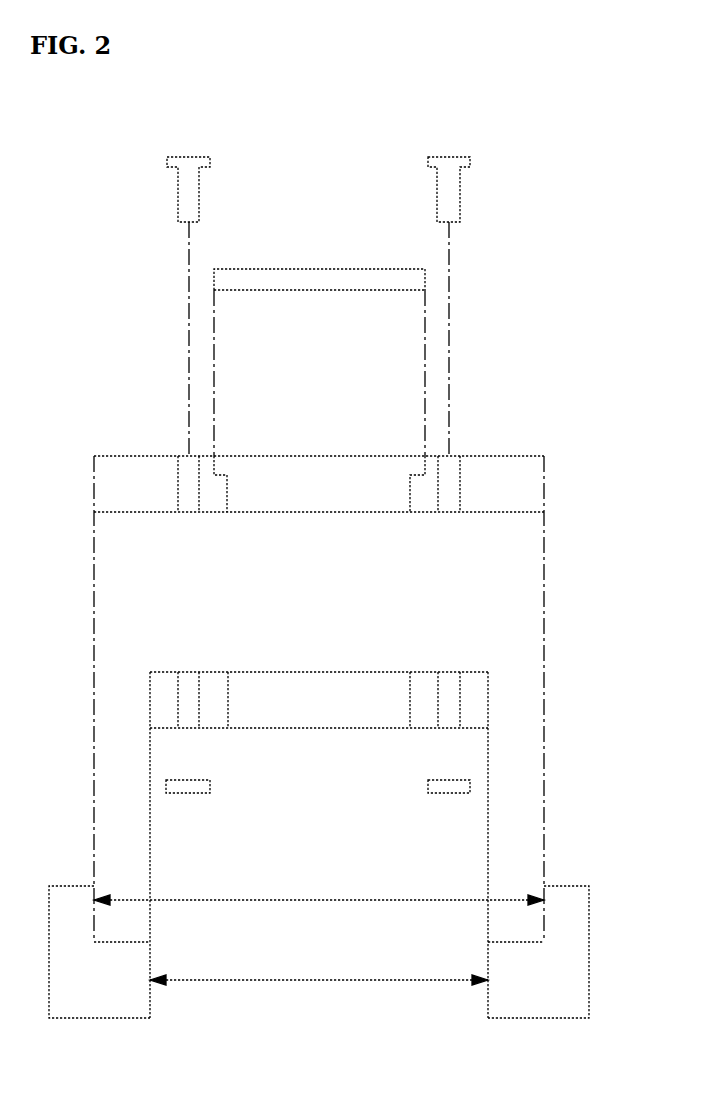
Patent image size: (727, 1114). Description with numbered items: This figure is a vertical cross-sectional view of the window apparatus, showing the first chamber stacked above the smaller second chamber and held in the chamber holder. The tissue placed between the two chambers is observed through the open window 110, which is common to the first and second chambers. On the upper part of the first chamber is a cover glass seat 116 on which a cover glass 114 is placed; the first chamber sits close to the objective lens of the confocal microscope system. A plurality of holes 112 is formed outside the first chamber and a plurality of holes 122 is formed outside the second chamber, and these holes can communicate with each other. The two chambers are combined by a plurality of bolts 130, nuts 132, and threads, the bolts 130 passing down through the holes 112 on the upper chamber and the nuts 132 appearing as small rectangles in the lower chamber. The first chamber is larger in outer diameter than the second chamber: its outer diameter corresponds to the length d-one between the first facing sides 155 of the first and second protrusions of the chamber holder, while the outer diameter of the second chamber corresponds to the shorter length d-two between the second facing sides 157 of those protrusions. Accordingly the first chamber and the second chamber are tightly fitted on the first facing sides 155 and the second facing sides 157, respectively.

The open window 110 is at (318, 458).
The holes 112 is at (178, 482).
The cover glass 114 is at (320, 275).
The cover glass seat 116 is at (222, 456).
The holes 122 is at (188, 672).
The bolts 130 is at (452, 195).
The nuts 132 is at (430, 782).
The first facing sides 155 is at (544, 928).
The second facing sides 157 is at (488, 1000).